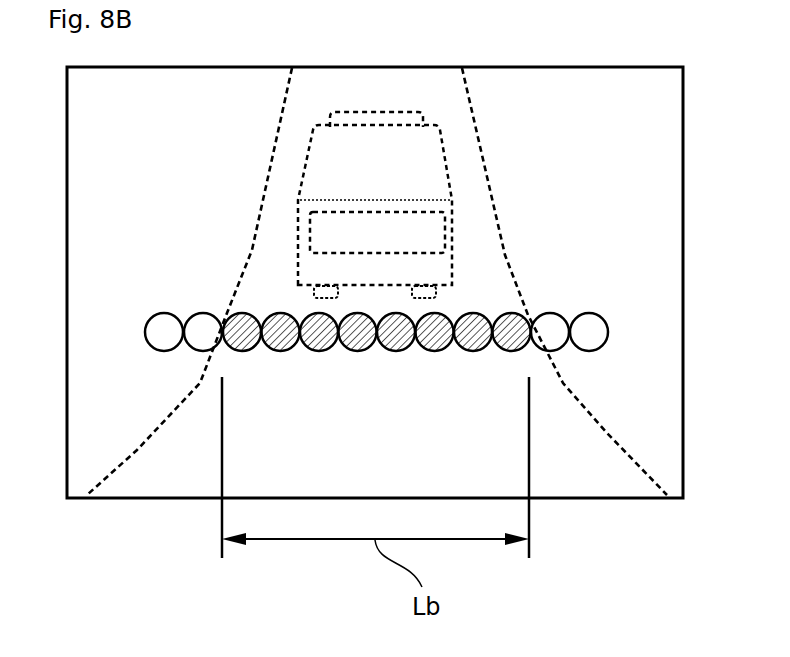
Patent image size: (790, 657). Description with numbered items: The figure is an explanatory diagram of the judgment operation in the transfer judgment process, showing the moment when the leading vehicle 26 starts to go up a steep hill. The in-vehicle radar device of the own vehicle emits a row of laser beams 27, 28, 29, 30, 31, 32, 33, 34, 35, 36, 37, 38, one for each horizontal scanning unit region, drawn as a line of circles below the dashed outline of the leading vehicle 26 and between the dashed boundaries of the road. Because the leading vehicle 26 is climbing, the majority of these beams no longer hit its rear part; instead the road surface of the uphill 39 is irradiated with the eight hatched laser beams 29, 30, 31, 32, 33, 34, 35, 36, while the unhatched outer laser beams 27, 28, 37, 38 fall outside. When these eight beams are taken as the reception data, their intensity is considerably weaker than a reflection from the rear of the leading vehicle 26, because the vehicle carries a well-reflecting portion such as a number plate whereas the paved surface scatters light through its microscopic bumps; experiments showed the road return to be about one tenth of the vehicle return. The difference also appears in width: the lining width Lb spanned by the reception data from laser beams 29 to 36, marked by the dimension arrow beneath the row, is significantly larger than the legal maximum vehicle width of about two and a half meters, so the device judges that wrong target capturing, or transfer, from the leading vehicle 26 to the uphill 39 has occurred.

The leading vehicle 26 is at (438, 185).
The laser beam 27 is at (167, 313).
The laser beam 28 is at (215, 313).
The laser beam 29 is at (242, 352).
The laser beam 30 is at (282, 351).
The laser beam 31 is at (322, 350).
The laser beam 32 is at (362, 350).
The laser beam 33 is at (400, 350).
The laser beam 34 is at (440, 350).
The laser beam 35 is at (478, 350).
The laser beam 36 is at (518, 350).
The laser beam 37 is at (555, 313).
The laser beam 38 is at (598, 313).
The uphill 39 is at (262, 265).